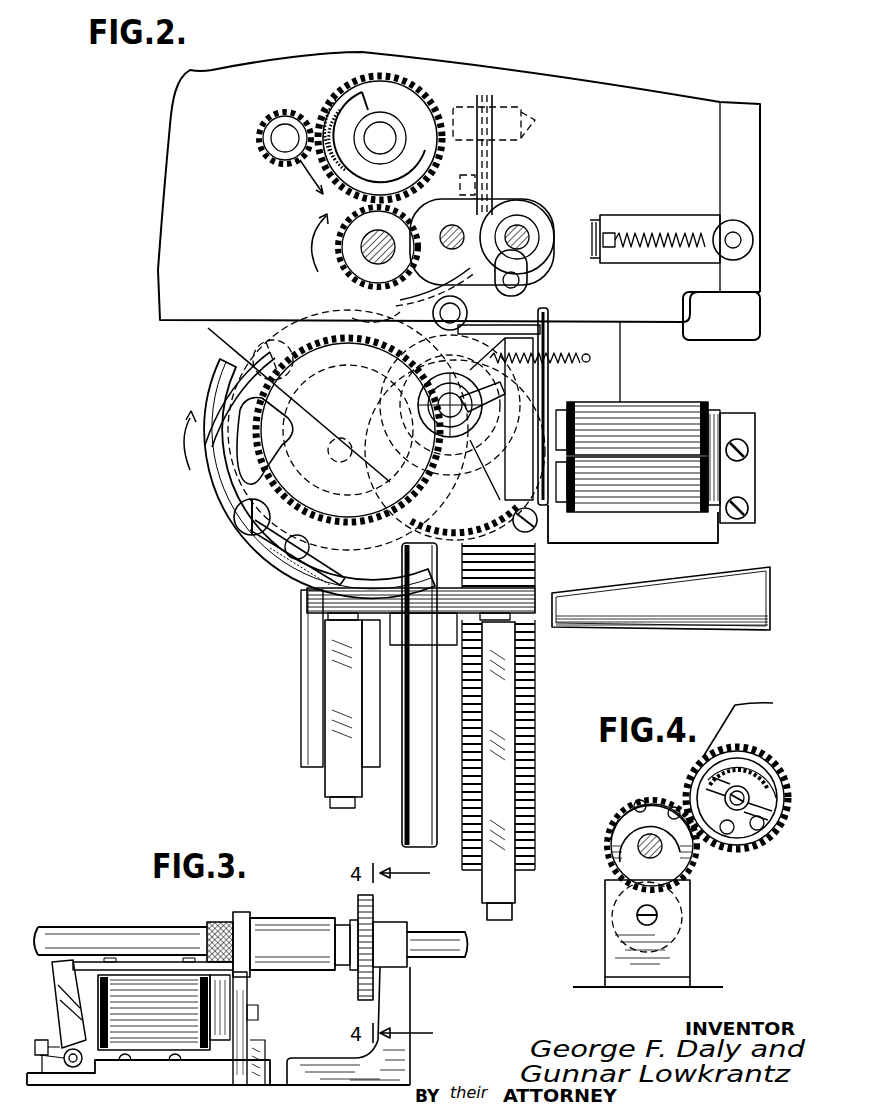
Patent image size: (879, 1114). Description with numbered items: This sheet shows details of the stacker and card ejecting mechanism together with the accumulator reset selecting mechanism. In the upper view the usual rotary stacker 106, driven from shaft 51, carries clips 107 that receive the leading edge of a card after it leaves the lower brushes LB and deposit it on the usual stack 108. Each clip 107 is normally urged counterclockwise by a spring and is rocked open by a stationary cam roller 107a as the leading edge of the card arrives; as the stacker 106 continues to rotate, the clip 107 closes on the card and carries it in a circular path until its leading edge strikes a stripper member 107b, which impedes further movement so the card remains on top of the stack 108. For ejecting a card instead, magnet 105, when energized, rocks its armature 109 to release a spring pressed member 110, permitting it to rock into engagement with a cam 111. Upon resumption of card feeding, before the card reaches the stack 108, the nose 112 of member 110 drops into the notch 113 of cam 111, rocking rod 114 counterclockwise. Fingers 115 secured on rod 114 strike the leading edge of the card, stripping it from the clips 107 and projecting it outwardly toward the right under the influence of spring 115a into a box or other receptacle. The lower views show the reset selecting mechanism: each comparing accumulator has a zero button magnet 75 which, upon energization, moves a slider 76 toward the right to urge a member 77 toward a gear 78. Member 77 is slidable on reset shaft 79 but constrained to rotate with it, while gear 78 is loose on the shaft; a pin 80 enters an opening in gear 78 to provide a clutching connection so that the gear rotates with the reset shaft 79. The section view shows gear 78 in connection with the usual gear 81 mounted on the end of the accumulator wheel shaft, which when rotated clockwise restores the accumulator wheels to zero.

In FIG. 2, the lower brushes LB is at (505, 142).
In FIG. 2, the shaft 51 is at (366, 258).
In FIG. 2, the nose 112 is at (380, 318).
In FIG. 2, the spring pressed member 110 is at (540, 314).
In FIG. 2, the rod 114 is at (468, 313).
In FIG. 2, the cam 111 is at (482, 337).
In FIG. 2, the spring 115a is at (574, 346).
In FIG. 2, the notch 113 is at (500, 375).
In FIG. 2, the armature 109 is at (535, 380).
In FIG. 2, the magnet 105 is at (668, 392).
In FIG. 2, the clips 107 is at (205, 437).
In FIG. 2, the rotary stacker 106 is at (228, 490).
In FIG. 2, the stationary cam roller 107a is at (348, 430).
In FIG. 2, the fingers 115 is at (382, 525).
In FIG. 2, the stripper member 107b is at (300, 560).
In FIG. 2, the stack 108 is at (320, 605).
In FIG. 3, the slider 76 is at (93, 963).
In FIG. 3, the zero button magnet 75 is at (157, 990).
In FIG. 4, the zero button magnet 75 is at (612, 912).
In FIG. 3, the member 77 is at (280, 935).
In FIG. 3, the pin 80 is at (340, 935).
In FIG. 3, the gear 78 is at (373, 905).
In FIG. 4, the gear 78 is at (605, 852).
In FIG. 3, the reset shaft 79 is at (440, 960).
In FIG. 4, the reset shaft 79 is at (640, 840).
In FIG. 4, the gear 81 is at (780, 775).